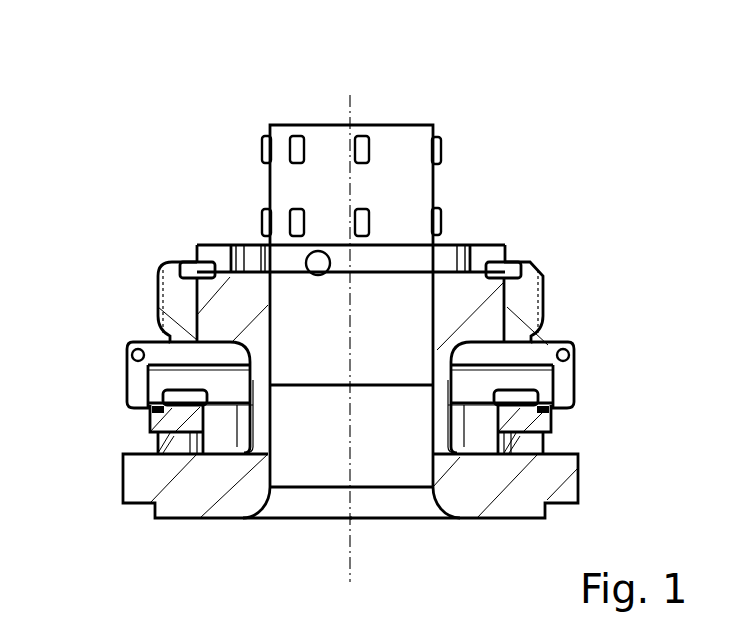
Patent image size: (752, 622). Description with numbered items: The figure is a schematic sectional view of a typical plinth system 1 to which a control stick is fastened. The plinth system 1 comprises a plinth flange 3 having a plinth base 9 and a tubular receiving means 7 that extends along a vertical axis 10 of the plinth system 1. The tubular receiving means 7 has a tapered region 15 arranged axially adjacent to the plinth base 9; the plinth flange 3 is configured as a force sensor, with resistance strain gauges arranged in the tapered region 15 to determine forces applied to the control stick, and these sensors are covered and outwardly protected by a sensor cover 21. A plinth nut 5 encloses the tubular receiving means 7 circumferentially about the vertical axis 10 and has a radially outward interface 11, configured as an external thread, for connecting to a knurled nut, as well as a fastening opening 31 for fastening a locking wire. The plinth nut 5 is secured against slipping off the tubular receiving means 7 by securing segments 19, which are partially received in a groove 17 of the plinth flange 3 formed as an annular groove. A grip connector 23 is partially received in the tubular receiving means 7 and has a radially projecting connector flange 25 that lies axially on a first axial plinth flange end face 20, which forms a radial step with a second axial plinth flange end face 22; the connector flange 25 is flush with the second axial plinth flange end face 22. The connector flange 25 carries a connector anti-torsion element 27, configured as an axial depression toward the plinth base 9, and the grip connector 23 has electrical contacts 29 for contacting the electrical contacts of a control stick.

The plinth system 1 is at (98, 114).
The plinth flange 3 is at (123, 462).
The plinth nut 5 is at (127, 378).
The tubular receiving means 7 is at (453, 393).
The plinth base 9 is at (580, 480).
The vertical axis 10 is at (350, 573).
The interface 11 is at (548, 306).
The tapered region 15 is at (453, 392).
The groove 17 is at (497, 261).
The securing segments 19 is at (540, 282).
The first axial plinth flange end face 20 is at (450, 245).
The sensor cover 21 is at (550, 440).
The second axial plinth flange end face 22 is at (213, 245).
The grip connector 23 is at (304, 123).
The connector flange 25 is at (441, 272).
The connector anti-torsion element 27 is at (246, 244).
The electrical contacts 29 is at (364, 125).
The fastening opening 31 is at (136, 350).